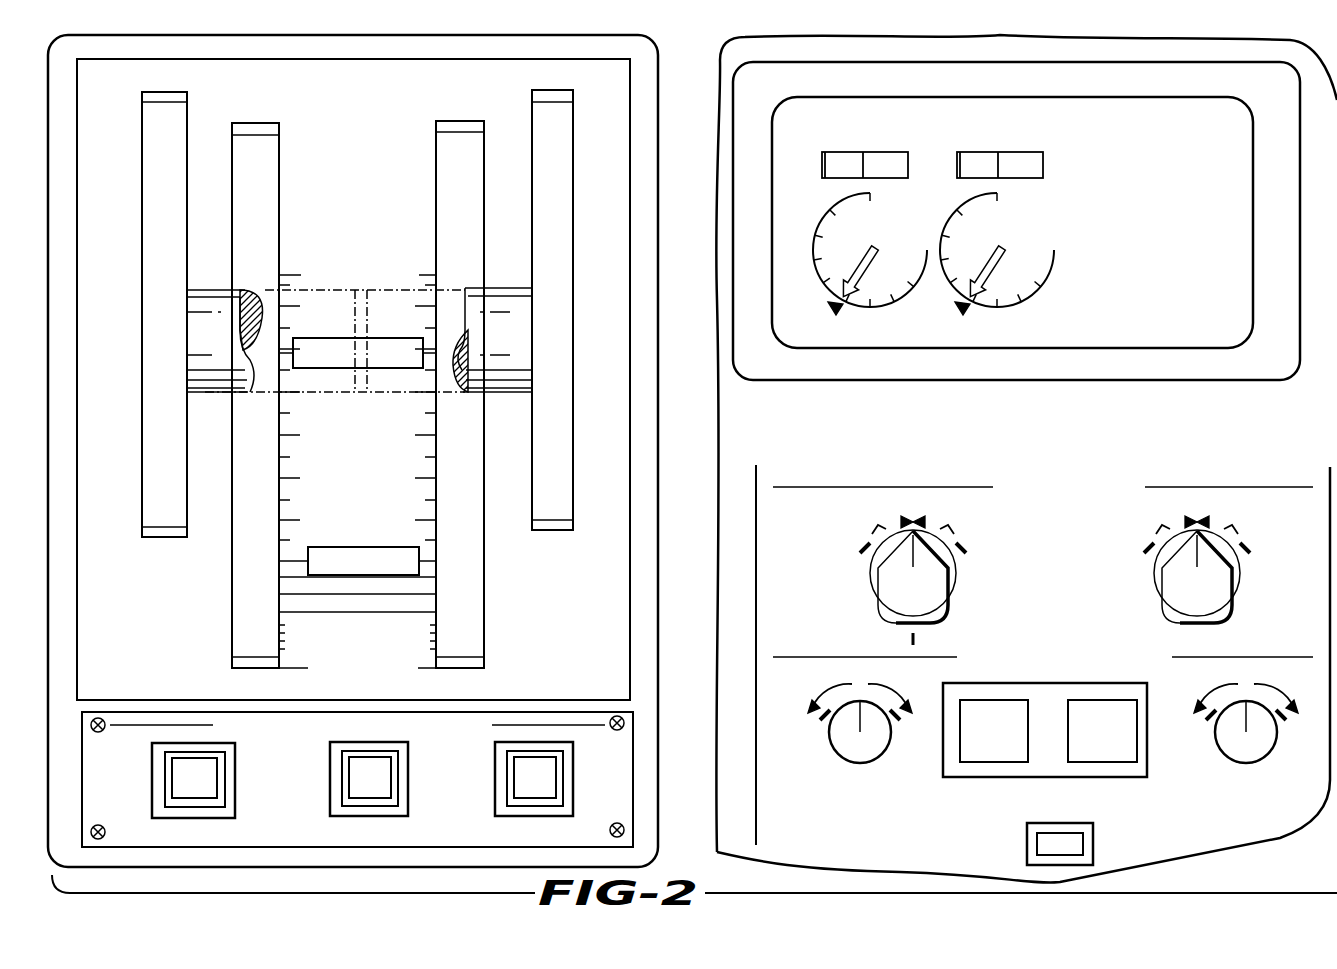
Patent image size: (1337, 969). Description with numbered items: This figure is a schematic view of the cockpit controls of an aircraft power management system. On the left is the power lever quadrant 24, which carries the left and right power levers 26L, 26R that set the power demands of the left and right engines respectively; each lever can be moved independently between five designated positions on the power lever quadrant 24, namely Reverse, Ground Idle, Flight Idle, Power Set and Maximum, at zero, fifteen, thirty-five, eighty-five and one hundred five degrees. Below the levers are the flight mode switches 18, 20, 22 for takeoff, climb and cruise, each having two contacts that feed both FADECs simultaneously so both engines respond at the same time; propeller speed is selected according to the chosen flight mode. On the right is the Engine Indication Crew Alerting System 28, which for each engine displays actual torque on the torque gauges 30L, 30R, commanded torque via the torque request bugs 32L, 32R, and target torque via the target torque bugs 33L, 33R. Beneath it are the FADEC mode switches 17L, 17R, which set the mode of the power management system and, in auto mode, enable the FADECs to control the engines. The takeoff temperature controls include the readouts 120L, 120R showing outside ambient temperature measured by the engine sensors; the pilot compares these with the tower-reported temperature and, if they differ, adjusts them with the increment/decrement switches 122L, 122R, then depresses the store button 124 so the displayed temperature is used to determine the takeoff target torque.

The power lever quadrant 24 is at (633, 95).
The left power lever 26L is at (210, 288).
The right power lever 26R is at (495, 287).
The flight mode switch for takeoff 18 is at (235, 776).
The flight mode switch for climb 20 is at (408, 775).
The flight mode switch for cruise 22 is at (573, 777).
The Engine Indication Crew Alerting System (EICAS) 28 is at (1036, 42).
The left target torque bug 33L is at (836, 207).
The right target torque bug 33R is at (966, 207).
The left torque gauge 30L is at (878, 242).
The right torque gauge 30R is at (1005, 242).
The left torque request bug 32L is at (838, 308).
The right torque request bug 32R is at (965, 308).
The left FADEC mode switch 17L is at (871, 573).
The right FADEC mode switch 17R is at (1155, 573).
The left outside ambient temperature readout 120L is at (858, 746).
The right outside ambient temperature readout 120R is at (1245, 746).
The left increment/decrement switch 122L is at (982, 762).
The right increment/decrement switch 122R is at (1110, 762).
The store button 124 is at (1093, 846).